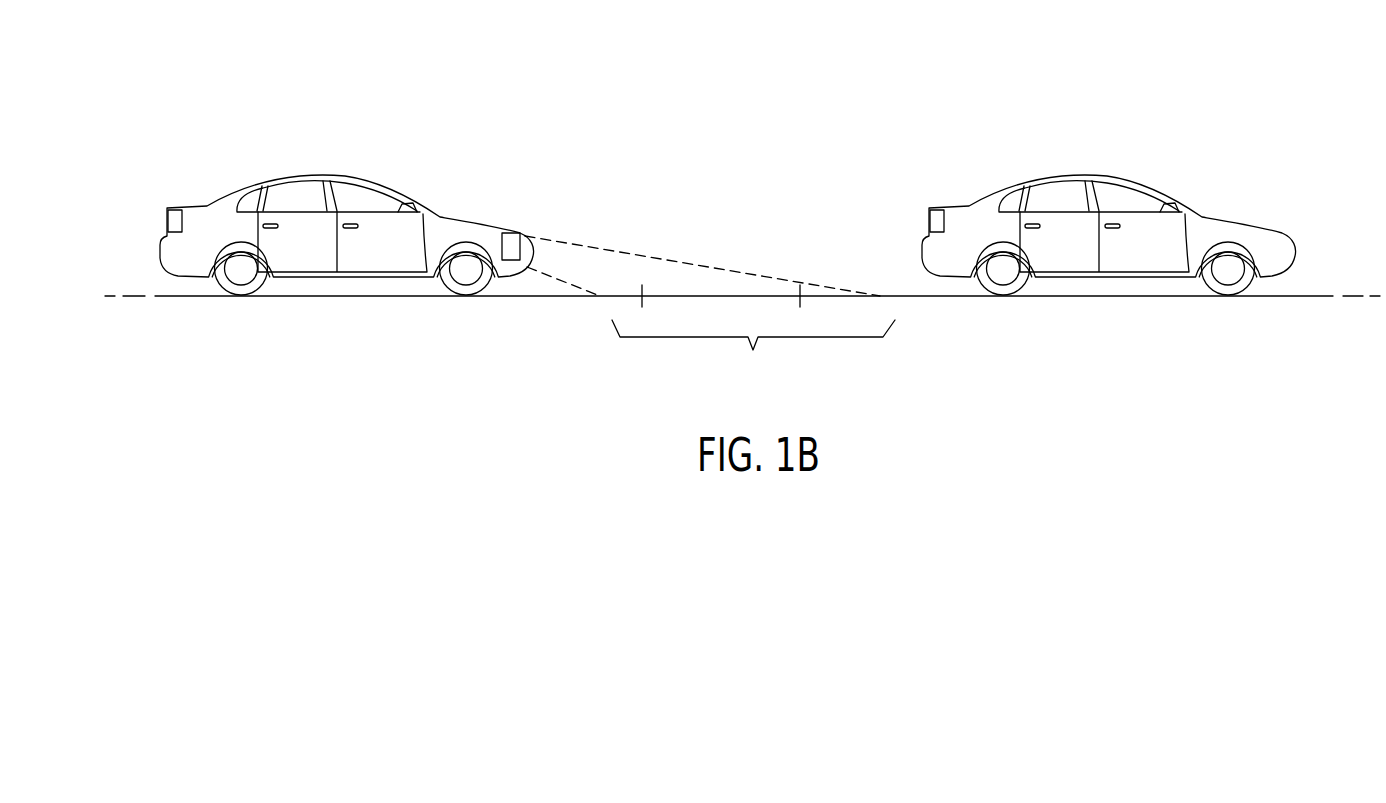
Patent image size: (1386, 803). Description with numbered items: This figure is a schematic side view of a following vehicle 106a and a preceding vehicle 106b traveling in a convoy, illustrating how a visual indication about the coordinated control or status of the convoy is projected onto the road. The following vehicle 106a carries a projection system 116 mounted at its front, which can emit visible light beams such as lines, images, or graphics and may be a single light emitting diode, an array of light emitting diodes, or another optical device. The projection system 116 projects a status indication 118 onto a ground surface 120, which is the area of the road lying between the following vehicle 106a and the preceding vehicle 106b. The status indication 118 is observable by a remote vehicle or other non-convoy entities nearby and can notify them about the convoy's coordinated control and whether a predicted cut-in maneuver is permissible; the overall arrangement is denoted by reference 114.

The following vehicle 106a is at (268, 139).
The preceding vehicle 106b is at (1037, 140).
The environment / scene 114 is at (1158, 67).
The projection system 116 is at (512, 233).
The status indication 118 is at (707, 293).
The ground surface 120 is at (744, 351).